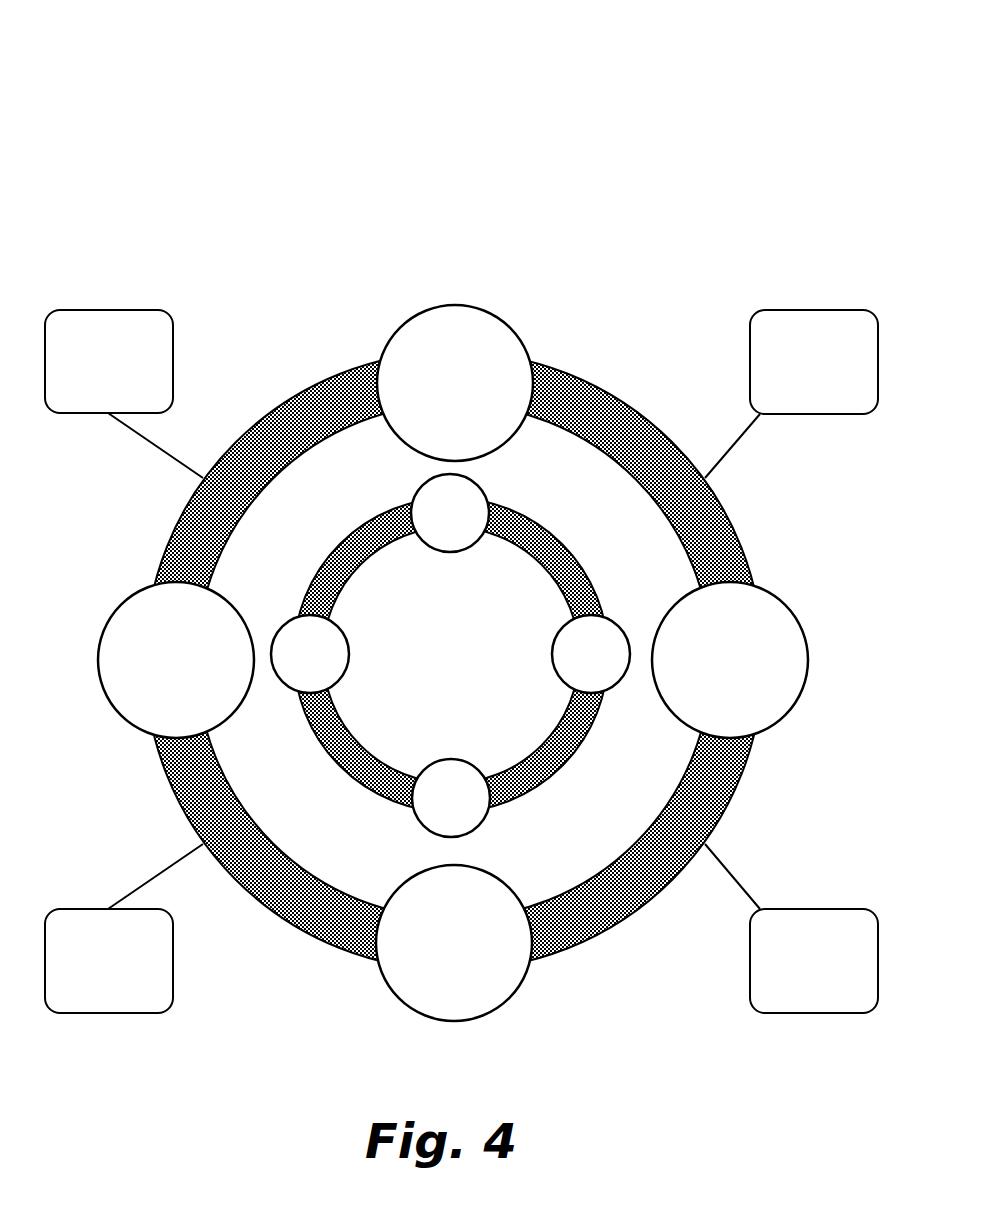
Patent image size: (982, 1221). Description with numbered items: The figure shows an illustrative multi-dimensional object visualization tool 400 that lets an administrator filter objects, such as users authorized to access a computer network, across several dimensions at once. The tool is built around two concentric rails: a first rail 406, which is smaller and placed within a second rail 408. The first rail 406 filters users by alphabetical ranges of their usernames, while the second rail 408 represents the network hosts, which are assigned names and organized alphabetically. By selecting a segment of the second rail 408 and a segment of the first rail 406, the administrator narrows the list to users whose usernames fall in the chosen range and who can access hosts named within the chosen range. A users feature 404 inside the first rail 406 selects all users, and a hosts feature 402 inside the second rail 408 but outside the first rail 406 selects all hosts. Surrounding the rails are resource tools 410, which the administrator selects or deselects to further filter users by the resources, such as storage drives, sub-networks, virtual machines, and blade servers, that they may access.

The multi-dimensional object visualization tool 400 is at (186, 187).
The hosts feature 402 is at (453, 663).
The users feature 404 is at (450, 655).
The first rail 406 is at (306, 593).
The second rail 408 is at (618, 392).
The resource tools 410 is at (838, 310).